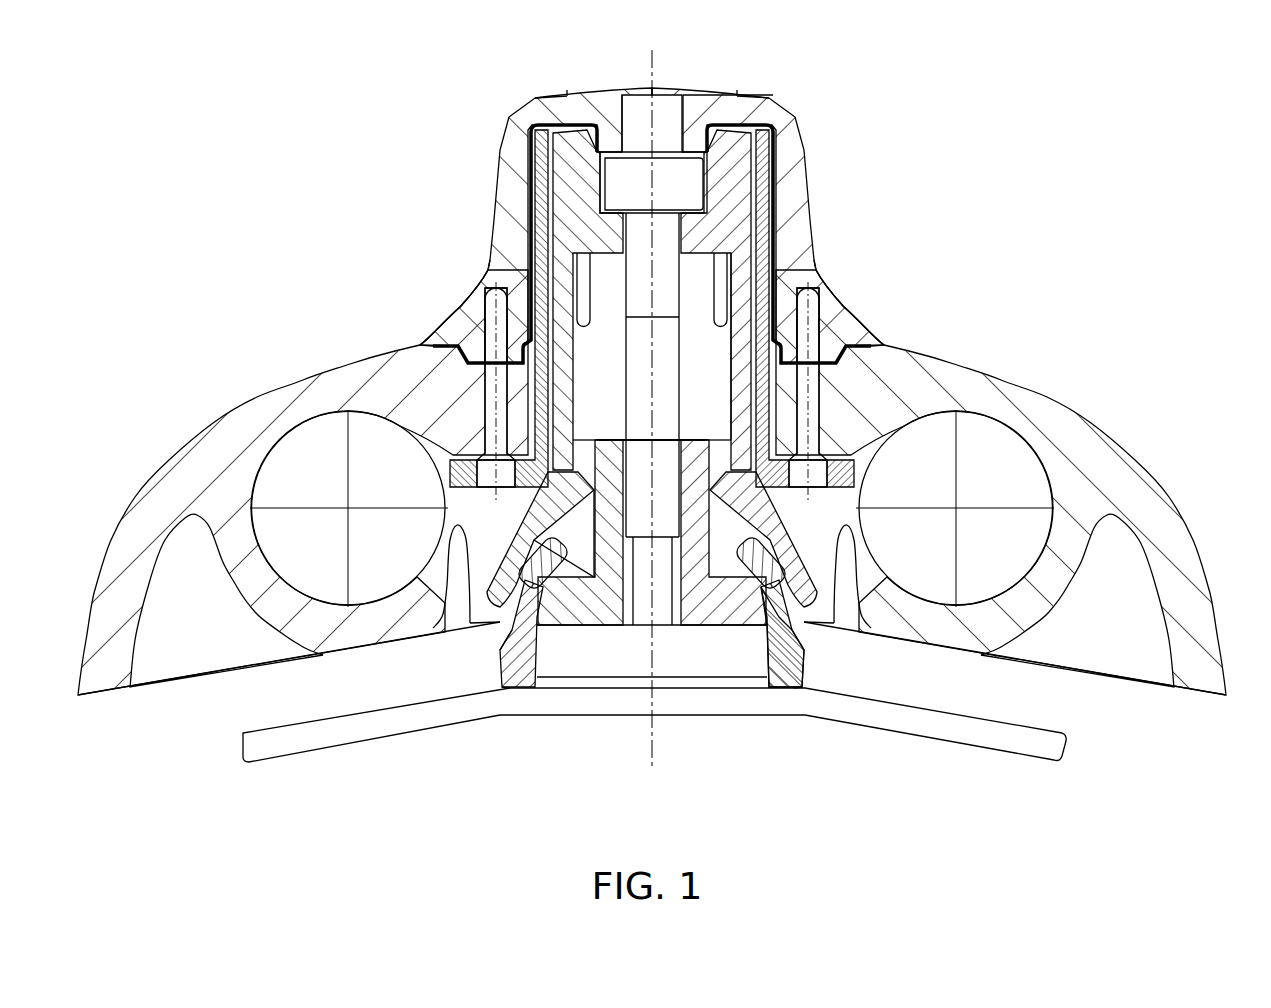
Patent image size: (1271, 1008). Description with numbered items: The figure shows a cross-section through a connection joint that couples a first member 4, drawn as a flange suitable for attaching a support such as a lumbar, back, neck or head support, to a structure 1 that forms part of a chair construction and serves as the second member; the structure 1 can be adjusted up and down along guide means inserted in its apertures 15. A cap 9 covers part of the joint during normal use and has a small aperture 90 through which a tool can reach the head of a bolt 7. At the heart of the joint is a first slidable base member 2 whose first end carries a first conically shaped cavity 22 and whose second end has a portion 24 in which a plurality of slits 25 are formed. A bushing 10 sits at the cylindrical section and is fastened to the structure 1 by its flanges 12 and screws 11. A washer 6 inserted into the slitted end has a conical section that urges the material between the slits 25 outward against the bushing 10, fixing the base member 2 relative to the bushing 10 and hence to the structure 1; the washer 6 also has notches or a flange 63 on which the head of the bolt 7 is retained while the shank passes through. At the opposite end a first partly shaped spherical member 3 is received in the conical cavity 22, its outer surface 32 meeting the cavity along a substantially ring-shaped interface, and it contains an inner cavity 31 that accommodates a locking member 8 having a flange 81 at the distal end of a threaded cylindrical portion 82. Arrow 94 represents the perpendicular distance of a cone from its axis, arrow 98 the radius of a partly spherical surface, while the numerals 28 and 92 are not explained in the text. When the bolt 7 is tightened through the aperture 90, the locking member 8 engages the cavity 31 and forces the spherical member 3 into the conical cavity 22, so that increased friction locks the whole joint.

The structure 1 is at (1043, 410).
The first slidable base member 2 is at (748, 218).
The first partly shaped spherical member 3 is at (515, 658).
The first member 4 is at (962, 745).
The washer 6 is at (588, 202).
The bolt 7 is at (662, 357).
The first locking member 8 is at (600, 650).
The cap 9 is at (505, 248).
The bushing 10 is at (540, 293).
The screws 11 is at (466, 344).
The flanges 12 is at (430, 345).
The apertures 15 is at (277, 470).
The first conically shaped cavity 22 is at (850, 347).
The portion 24 is at (768, 150).
The slits 25 is at (722, 280).
The axis 28 is at (660, 63).
The inner cavity 31 is at (742, 655).
The outer surface 32 is at (603, 535).
The notches or flange 63 is at (705, 125).
The flange 81 is at (583, 605).
The cylindrical portion 82 is at (505, 628).
The aperture 90 is at (637, 110).
The right sealing finger 92 is at (527, 582).
The arrow 94 is at (777, 588).
The arrow 98 is at (675, 625).